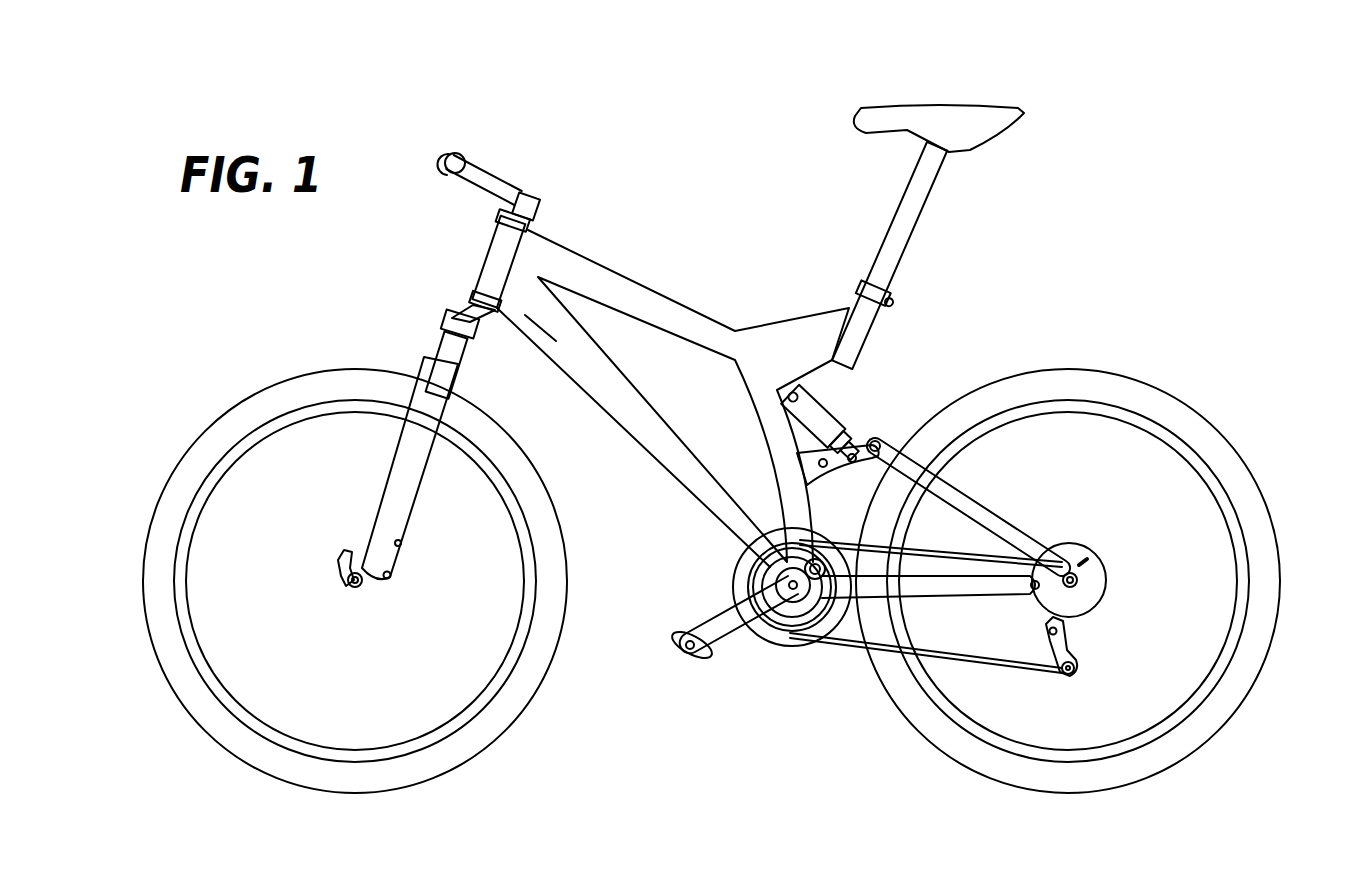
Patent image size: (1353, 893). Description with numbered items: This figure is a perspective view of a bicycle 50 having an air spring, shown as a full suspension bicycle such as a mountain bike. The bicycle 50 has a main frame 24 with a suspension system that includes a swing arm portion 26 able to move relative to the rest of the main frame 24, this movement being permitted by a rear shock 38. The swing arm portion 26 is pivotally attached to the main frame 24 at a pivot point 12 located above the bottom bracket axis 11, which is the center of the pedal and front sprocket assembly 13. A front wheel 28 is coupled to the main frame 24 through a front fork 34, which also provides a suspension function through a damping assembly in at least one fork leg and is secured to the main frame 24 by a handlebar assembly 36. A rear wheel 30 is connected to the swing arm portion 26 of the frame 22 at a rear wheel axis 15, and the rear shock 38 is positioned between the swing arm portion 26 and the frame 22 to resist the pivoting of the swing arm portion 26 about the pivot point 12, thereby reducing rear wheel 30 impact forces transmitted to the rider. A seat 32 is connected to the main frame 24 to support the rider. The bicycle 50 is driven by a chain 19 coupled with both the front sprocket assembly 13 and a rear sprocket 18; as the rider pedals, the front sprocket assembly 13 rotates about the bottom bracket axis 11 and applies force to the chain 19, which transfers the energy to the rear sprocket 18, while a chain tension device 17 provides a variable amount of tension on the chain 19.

The bicycle 50 is at (748, 65).
The frame 22 is at (1097, 238).
The main frame 24 is at (657, 292).
The swing arm portion 26 is at (968, 498).
The front wheel 28 is at (260, 390).
The rear wheel 30 is at (1227, 441).
The seat 32 is at (950, 108).
The front fork 34 is at (376, 521).
The handlebar assembly 36 is at (458, 151).
The rear shock 38 is at (836, 418).
The bottom bracket axis 11 is at (720, 615).
The pivot point 12 is at (787, 592).
The front sprocket assembly 13 is at (732, 580).
The rear wheel axis 15 is at (1088, 598).
The chain tension device 17 is at (1076, 667).
The rear sprocket 18 is at (1076, 597).
The chain 19 is at (857, 643).